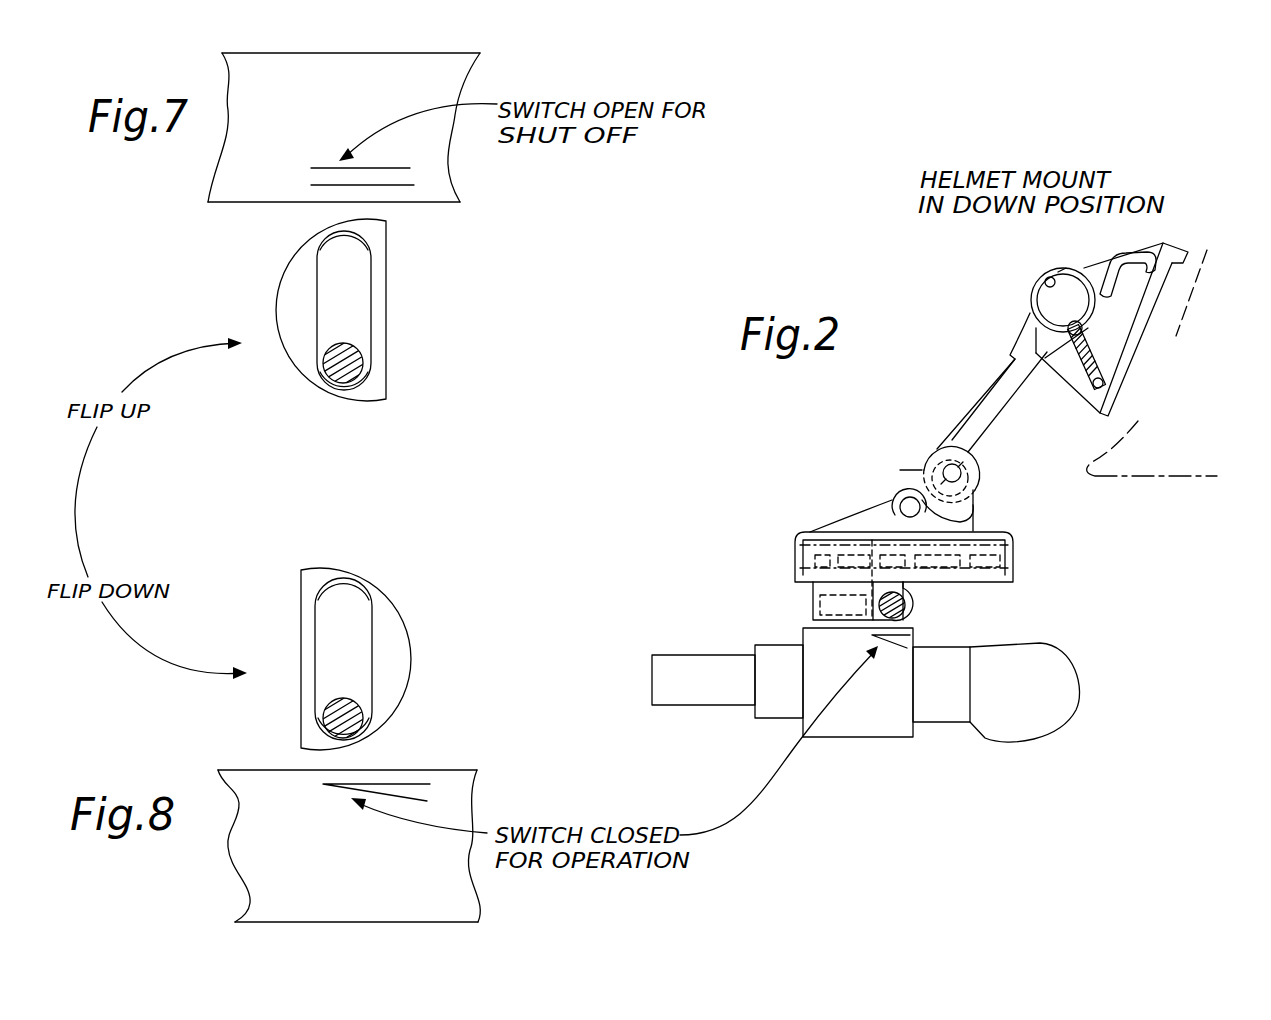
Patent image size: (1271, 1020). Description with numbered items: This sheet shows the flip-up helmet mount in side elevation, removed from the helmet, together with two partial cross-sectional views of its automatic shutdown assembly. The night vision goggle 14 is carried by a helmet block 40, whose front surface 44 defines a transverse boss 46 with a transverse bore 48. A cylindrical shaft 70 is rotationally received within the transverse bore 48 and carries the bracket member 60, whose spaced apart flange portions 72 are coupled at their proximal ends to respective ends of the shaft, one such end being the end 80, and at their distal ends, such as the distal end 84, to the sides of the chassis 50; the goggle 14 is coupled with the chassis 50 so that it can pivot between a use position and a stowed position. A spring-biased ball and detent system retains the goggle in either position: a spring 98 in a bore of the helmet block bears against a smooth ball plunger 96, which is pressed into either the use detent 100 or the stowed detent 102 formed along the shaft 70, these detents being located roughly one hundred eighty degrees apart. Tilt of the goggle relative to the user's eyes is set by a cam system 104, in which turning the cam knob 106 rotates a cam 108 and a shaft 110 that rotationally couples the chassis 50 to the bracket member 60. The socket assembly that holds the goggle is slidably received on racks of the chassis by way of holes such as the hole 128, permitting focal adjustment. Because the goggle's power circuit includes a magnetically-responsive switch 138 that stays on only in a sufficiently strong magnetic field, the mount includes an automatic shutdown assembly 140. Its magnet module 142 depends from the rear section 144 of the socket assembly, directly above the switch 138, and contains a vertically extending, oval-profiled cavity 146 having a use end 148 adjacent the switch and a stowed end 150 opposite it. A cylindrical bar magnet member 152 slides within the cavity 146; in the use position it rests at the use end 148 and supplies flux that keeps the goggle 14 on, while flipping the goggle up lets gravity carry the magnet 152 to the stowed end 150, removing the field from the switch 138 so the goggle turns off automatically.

In FIG. 2, the night vision goggle 14 is at (773, 645).
In FIG. 2, the helmet block 40 is at (1073, 399).
In FIG. 2, the front surface of the helmet block 44 is at (1093, 262).
In FIG. 2, the transverse boss 46 is at (1048, 272).
In FIG. 2, the transverse bore 48 is at (1037, 295).
In FIG. 2, the chassis 50 is at (852, 496).
In FIG. 2, the bracket member 60 is at (970, 400).
In FIG. 2, the cylindrical shaft 70 is at (1058, 278).
In FIG. 2, the flange portions 72 is at (993, 405).
In FIG. 2, the end of the cylindrical shaft 80 is at (1087, 307).
In FIG. 2, the distal end of the flange portion 84 is at (965, 532).
In FIG. 2, the spring-biased ball plunger 96 is at (1097, 360).
In FIG. 2, the spring 98 is at (1104, 383).
In FIG. 2, the use detent 100 is at (1086, 328).
In FIG. 2, the stowed detent 102 is at (1033, 279).
In FIG. 2, the cam system 104 is at (909, 459).
In FIG. 2, the cam knob 106 is at (957, 477).
In FIG. 2, the cam 108 is at (941, 448).
In FIG. 2, the shaft 110 is at (907, 500).
In FIG. 2, the hole 128 is at (828, 558).
In FIG. 2, the magnetically-responsive switch 138 is at (882, 630).
In FIG. 2, the automatic shutdown assembly 140 is at (927, 597).
In FIG. 7, the magnet module 142 is at (387, 276).
In FIG. 8, the magnet module 142 is at (395, 628).
In FIG. 2, the rear section of the socket assembly 144 is at (872, 553).
In FIG. 7, the cavity 146 is at (357, 320).
In FIG. 7, the use end 148 is at (364, 244).
In FIG. 8, the use end 148 is at (350, 736).
In FIG. 7, the stowed end 150 is at (362, 386).
In FIG. 8, the stowed end 150 is at (348, 583).
In FIG. 7, the cylindrical bar magnet member 152 is at (334, 380).
In FIG. 8, the cylindrical bar magnet member 152 is at (350, 710).
In FIG. 2, the cylindrical bar magnet member 152 is at (905, 605).